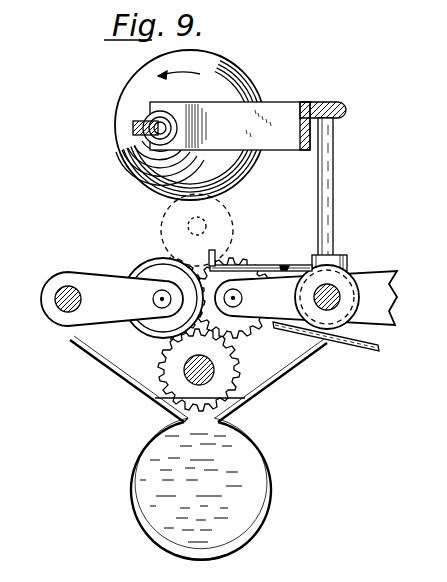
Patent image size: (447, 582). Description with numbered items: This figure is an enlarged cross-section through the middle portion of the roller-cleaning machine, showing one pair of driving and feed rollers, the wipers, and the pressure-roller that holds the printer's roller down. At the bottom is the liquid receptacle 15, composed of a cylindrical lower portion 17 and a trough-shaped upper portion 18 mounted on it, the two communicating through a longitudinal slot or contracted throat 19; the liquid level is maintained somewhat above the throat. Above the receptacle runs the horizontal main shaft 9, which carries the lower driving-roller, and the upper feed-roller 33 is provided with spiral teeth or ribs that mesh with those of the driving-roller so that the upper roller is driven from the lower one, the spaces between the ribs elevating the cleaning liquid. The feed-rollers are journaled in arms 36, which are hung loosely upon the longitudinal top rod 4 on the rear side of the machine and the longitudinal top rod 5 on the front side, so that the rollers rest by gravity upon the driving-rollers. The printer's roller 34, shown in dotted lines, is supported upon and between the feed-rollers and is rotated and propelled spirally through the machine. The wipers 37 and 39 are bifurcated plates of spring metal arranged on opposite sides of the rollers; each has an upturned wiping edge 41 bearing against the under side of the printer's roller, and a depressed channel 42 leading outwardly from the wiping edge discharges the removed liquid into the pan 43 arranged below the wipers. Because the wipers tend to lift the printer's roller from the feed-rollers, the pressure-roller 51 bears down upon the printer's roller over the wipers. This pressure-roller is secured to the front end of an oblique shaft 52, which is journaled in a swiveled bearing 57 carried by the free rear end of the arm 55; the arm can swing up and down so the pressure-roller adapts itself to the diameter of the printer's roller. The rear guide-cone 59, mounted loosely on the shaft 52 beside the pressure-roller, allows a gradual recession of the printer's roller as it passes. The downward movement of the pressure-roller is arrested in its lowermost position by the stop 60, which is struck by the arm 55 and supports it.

The pressure-roller 51 is at (238, 80).
The oblique shaft 52 is at (136, 128).
The arm 55 is at (230, 126).
The swiveled bearing 57 is at (156, 118).
The rear guide-cone 59 is at (133, 163).
The stop 60 is at (334, 152).
The printer's roller 34 is at (161, 222).
The upturned wiping edge 41 is at (230, 247).
The wiper 39 is at (257, 266).
The depressed channel 42 is at (284, 267).
The longitudinal top rod 5 is at (337, 292).
The arms 36 is at (219, 298).
The longitudinal top rod 4 is at (57, 291).
The upper feed-roller 33 is at (233, 298).
The wiper 37 is at (160, 362).
The main shaft 9 is at (192, 370).
The trough-shaped upper portion 18 is at (95, 380).
The throat 19 is at (215, 431).
The liquid receptacle 15 is at (262, 505).
The lower portion 17 is at (176, 571).
The pan 43 is at (406, 360).